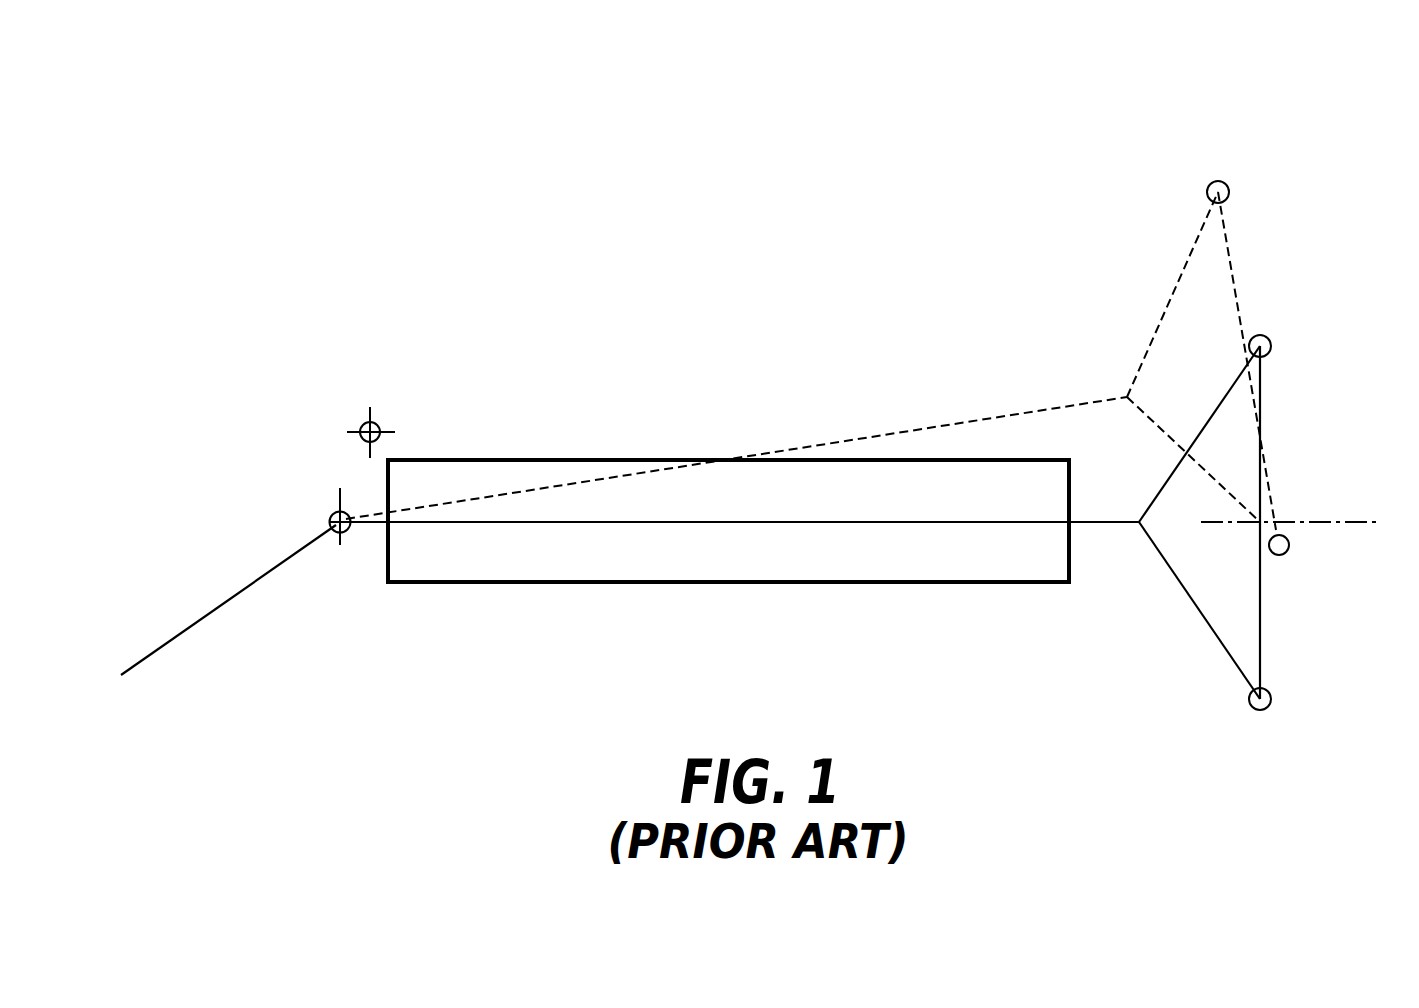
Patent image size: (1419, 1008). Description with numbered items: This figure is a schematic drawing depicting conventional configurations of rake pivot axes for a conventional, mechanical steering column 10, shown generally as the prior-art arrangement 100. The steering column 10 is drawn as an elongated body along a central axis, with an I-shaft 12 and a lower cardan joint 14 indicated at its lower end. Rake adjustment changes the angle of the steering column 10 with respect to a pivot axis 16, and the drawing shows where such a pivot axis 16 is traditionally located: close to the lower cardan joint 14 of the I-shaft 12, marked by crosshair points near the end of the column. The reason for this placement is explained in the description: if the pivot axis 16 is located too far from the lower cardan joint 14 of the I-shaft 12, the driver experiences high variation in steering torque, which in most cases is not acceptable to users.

The prior art optical system 100 is at (1316, 136).
The steering column 10 is at (820, 521).
The I-shaft 12 is at (390, 523).
The lower cardan joint 14 is at (336, 513).
The pivot axis 16 is at (362, 430).